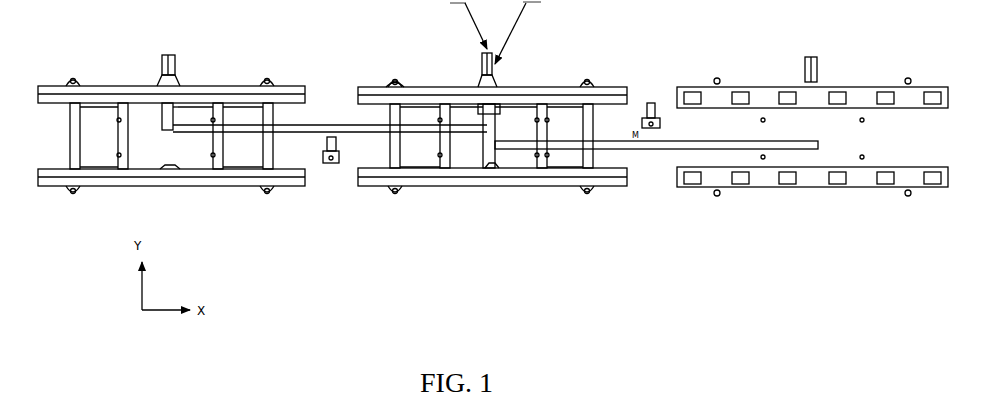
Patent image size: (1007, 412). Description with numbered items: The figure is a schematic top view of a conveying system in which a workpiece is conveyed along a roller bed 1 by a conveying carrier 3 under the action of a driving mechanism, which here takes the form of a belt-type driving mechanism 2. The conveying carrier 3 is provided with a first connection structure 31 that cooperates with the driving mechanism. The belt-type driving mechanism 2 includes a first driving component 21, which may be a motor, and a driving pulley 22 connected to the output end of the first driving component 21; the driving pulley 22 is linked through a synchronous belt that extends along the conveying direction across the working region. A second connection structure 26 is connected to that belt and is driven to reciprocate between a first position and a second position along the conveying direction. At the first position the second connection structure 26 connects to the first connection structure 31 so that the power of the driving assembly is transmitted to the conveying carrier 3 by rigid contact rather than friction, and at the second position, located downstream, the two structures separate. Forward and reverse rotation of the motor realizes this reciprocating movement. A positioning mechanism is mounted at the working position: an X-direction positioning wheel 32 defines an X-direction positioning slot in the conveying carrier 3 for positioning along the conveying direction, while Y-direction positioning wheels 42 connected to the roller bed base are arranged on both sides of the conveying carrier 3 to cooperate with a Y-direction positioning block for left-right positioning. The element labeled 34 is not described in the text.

The roller bed 1 is at (492, 194).
The belt-type driving mechanism 2 is at (323, 176).
The first driving component 21 is at (333, 164).
The driving pulley 22 is at (392, 86).
The second connection structure 26 is at (501, 121).
The conveying carrier 3 is at (599, 132).
The first connection structure 31 is at (501, 97).
The X-direction positioning wheel 32 is at (478, 72).
The upright 34 is at (437, 115).
The Y-direction positioning wheel 42 is at (397, 81).